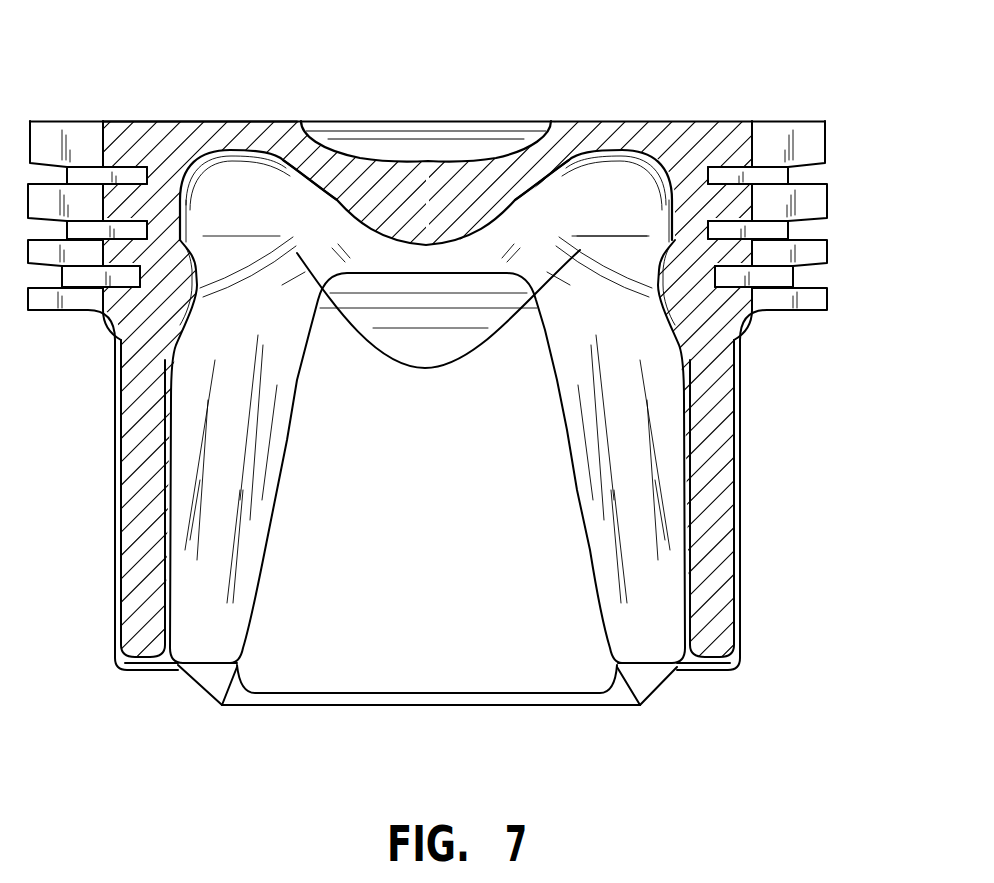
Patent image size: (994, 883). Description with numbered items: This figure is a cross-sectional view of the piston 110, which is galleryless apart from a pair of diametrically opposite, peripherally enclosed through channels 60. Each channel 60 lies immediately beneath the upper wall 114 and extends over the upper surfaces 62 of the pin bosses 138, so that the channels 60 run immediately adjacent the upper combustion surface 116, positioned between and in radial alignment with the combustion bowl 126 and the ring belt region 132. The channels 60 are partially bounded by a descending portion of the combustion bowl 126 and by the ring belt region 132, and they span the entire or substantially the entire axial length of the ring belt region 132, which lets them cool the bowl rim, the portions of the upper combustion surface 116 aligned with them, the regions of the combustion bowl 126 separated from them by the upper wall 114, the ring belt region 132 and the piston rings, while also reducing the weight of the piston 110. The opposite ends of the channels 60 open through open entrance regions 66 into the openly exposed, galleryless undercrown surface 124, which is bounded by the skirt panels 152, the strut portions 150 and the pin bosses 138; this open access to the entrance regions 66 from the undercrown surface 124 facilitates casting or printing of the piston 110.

The piston 110 is at (792, 86).
The upper wall 114 is at (633, 121).
The upper combustion surface 116 is at (210, 115).
The combustion bowl 126 is at (447, 114).
The undercrown surface 124 is at (303, 168).
The open entrance regions 66 is at (228, 176).
The ring belt region 132 is at (847, 122).
The channels 60 is at (117, 322).
The upper surfaces of the pin bosses 62 is at (232, 263).
The strut portions 150 is at (182, 678).
The pin bosses 138 is at (220, 707).
The skirt panels 152 is at (538, 707).